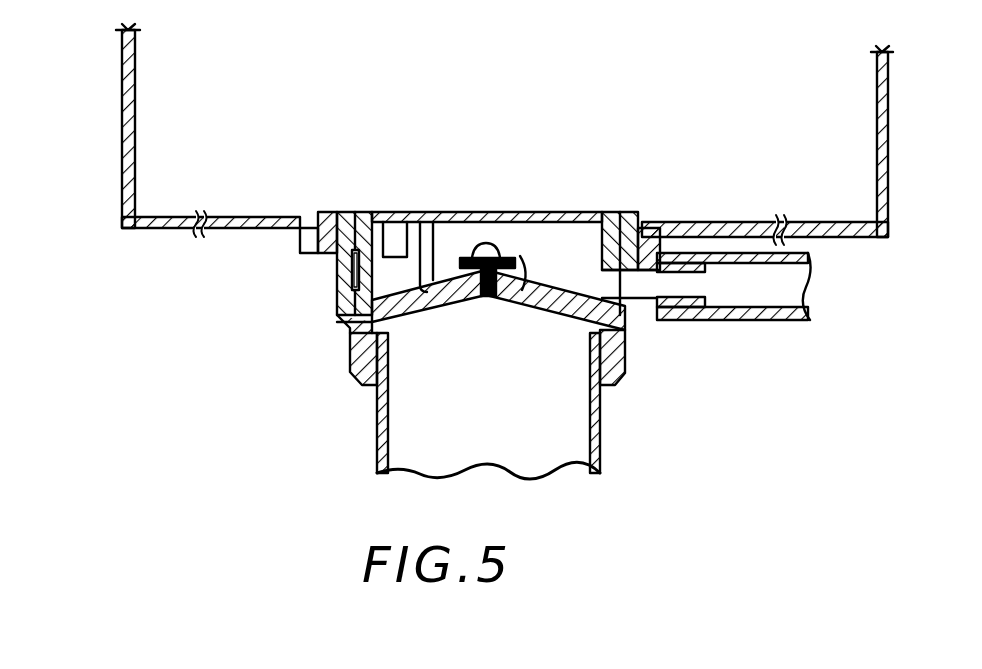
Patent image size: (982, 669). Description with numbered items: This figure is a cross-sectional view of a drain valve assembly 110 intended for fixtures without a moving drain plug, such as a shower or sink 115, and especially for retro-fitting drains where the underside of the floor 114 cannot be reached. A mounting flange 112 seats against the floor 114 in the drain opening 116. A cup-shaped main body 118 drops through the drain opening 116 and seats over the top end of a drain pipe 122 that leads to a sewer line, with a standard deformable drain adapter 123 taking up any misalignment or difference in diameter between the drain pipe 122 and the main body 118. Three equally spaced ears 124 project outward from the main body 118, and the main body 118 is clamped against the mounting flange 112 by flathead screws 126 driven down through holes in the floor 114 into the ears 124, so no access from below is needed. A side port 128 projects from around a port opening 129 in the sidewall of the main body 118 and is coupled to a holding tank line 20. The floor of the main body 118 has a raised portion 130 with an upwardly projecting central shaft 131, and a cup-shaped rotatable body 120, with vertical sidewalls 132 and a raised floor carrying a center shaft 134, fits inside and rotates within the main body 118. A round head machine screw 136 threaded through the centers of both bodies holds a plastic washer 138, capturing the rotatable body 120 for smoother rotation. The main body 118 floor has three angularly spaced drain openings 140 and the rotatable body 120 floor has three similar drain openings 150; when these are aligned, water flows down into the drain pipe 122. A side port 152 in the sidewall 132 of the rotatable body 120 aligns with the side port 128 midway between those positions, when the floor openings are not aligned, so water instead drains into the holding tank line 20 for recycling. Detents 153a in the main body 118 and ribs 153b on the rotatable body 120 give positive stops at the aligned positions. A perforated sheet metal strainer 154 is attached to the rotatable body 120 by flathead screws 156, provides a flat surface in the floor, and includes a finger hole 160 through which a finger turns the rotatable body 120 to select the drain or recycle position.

The holding tank line 20 is at (800, 321).
The drain valve assembly 110 is at (272, 398).
The mounting flange 112 is at (318, 214).
The floor 114 is at (228, 216).
The shower or sink 115 is at (120, 112).
The drain opening 116 is at (648, 240).
The main body 118 is at (334, 300).
The rotatable body 120 is at (437, 272).
The drain pipe 122 is at (601, 440).
The drain adapter 123 is at (368, 385).
The ears 124 is at (299, 239).
The flathead screws 126 is at (330, 212).
The side port 128 is at (690, 289).
The port opening 129 is at (648, 312).
The raised portion 130 is at (408, 318).
The central shaft 131 is at (485, 300).
The vertical sidewalls 132 is at (372, 230).
The center shaft 134 is at (534, 272).
The round head machine screw 136 is at (500, 212).
The plastic washer 138 is at (470, 262).
The drain openings 140 is at (405, 320).
The drain openings 150 is at (614, 284).
The side port 152 is at (545, 312).
The detents 153a is at (351, 265).
The ribs 153b is at (338, 326).
The strainer 154 is at (470, 212).
The flathead screws 156 is at (405, 212).
The finger hole 160 is at (556, 216).